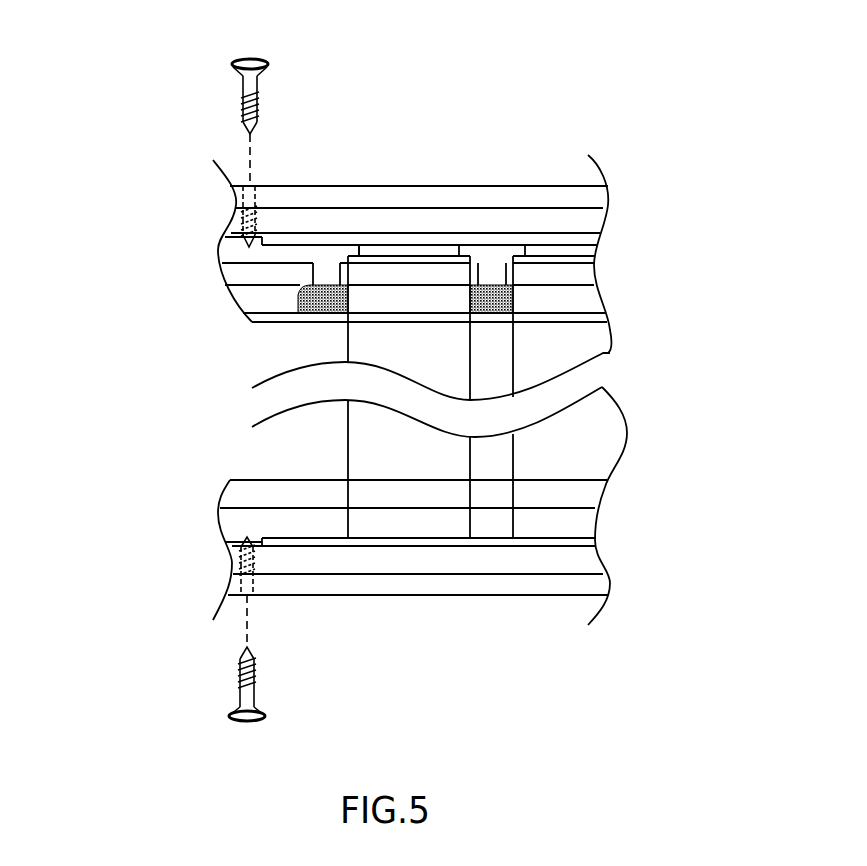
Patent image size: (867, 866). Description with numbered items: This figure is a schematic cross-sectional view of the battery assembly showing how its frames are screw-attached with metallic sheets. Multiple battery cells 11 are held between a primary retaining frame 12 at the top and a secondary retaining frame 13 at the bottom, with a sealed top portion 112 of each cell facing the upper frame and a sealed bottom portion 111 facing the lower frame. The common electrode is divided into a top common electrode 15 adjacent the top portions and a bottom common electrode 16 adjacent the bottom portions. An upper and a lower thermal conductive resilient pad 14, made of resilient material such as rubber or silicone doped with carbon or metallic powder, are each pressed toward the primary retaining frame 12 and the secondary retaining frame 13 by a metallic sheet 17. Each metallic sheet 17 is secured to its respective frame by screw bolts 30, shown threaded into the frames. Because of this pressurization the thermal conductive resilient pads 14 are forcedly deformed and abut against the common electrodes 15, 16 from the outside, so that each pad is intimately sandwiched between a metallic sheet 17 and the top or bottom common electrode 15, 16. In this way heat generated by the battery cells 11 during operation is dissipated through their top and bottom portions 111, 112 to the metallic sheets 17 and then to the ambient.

The battery cell 11 is at (306, 429).
The primary retaining frame 12 is at (232, 250).
The secondary retaining frame 13 is at (232, 530).
The thermal conductive resilient pad 14 is at (307, 218).
The top common electrode 15 is at (582, 238).
The bottom common electrode 16 is at (573, 542).
The metallic sheet 17 is at (592, 193).
The screw bolt 30 is at (250, 84).
The sealed bottom portion 111 is at (413, 530).
The sealed top portion 112 is at (403, 250).